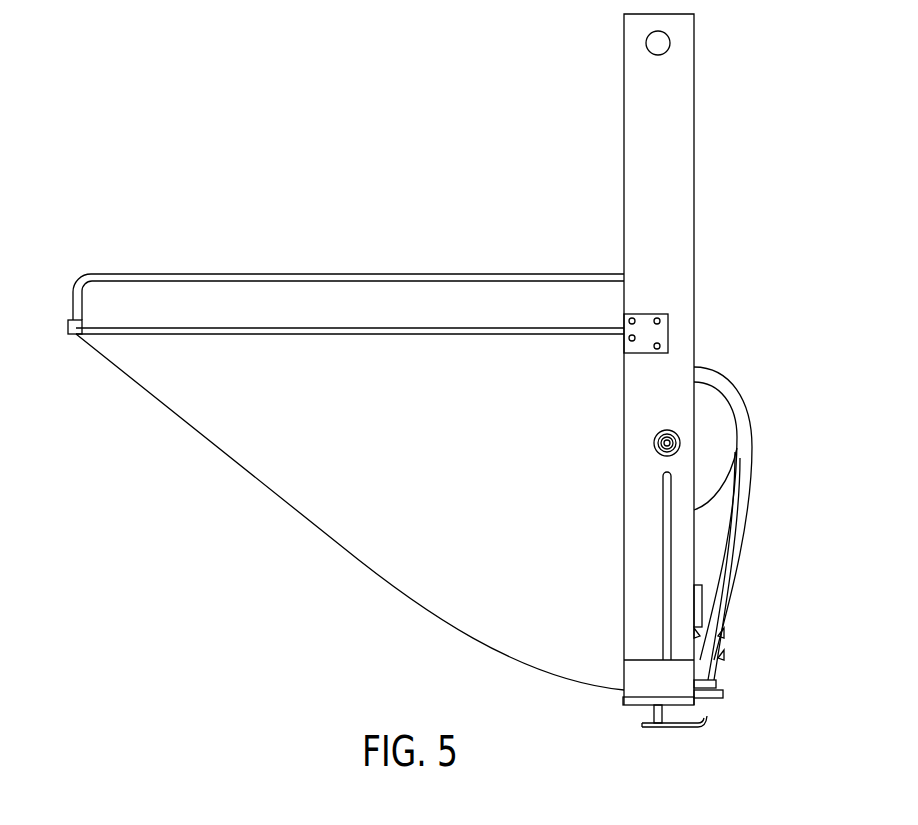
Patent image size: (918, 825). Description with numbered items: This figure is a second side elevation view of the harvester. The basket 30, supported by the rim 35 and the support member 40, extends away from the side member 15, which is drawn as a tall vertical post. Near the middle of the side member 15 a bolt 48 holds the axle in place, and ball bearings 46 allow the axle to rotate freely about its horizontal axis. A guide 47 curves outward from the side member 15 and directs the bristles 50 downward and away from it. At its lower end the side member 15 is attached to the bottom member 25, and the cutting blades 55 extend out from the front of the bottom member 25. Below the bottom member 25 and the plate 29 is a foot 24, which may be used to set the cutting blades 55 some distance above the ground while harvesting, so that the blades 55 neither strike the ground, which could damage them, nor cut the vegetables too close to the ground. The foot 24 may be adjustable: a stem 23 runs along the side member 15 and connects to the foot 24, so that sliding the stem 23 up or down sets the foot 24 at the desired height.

The side member 15 is at (668, 181).
The stem 23 is at (663, 585).
The foot 24 is at (686, 727).
The bottom member 25 is at (680, 678).
The plate 29 is at (629, 705).
The basket 30 is at (394, 442).
The rim 35 is at (170, 328).
The support member 40 is at (320, 274).
The ball bearings 46 is at (666, 430).
The guide 47 is at (712, 420).
The bolt 48 is at (661, 446).
The bristles 50 is at (738, 498).
The cutting blades 55 is at (711, 698).